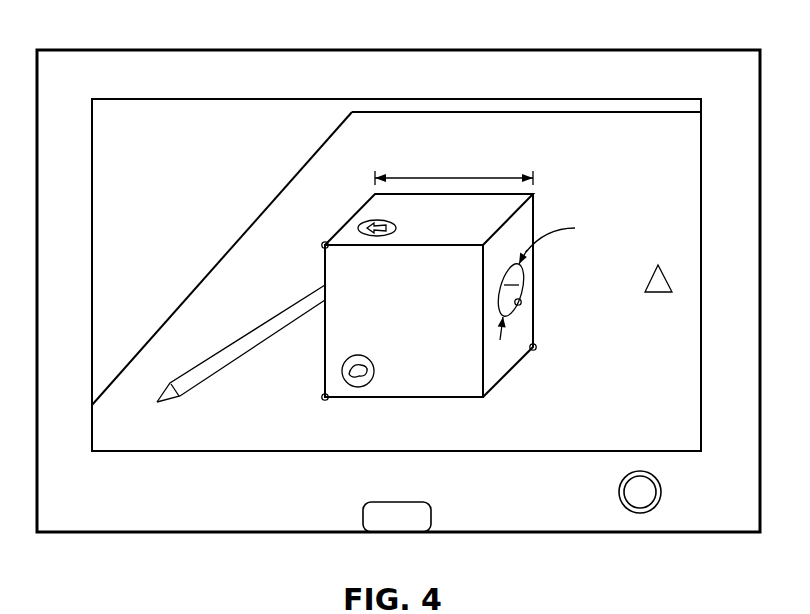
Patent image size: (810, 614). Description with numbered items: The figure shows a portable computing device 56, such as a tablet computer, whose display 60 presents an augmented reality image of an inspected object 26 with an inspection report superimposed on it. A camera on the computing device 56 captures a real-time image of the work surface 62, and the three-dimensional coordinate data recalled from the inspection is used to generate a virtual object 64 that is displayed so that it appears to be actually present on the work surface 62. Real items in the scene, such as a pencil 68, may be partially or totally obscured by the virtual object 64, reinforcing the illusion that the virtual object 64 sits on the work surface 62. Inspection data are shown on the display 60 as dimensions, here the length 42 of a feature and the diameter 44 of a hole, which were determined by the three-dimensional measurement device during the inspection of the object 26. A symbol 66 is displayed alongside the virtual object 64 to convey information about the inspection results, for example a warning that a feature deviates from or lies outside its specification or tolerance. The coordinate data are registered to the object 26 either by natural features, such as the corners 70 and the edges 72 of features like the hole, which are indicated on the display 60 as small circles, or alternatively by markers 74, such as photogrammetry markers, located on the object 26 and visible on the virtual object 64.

The portable computing device 56 is at (100, 34).
The display 60 is at (158, 97).
The length 42 is at (459, 134).
The diameter 44 is at (640, 200).
The work surface 62 is at (218, 262).
The pencil 68 is at (278, 315).
The corners 70 is at (322, 243).
The markers 74 is at (380, 220).
The edges 72 is at (521, 300).
The object 26 is at (429, 294).
The virtual object 64 is at (476, 400).
The symbols 66 is at (660, 306).